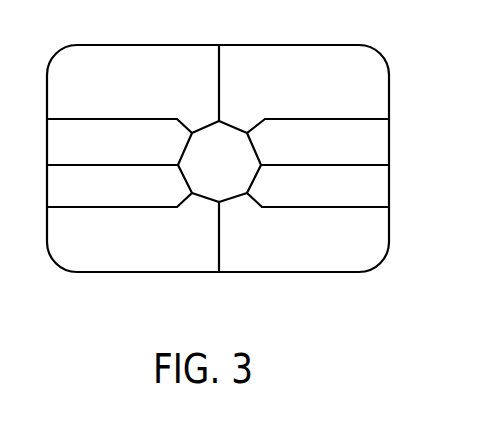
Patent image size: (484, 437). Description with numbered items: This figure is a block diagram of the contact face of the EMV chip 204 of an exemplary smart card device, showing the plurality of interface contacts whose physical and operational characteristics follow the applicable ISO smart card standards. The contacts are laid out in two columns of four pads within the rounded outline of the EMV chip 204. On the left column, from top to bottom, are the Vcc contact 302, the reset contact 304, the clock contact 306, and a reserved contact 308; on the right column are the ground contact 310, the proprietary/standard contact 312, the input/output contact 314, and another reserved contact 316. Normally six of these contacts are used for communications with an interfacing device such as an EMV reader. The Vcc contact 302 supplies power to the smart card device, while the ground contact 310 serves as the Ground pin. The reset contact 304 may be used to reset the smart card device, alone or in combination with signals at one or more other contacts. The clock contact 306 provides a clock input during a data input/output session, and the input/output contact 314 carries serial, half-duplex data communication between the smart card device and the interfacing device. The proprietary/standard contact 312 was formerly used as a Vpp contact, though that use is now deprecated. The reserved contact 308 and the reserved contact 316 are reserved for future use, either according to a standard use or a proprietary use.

The EMV chip 204 is at (218, 145).
The Vcc contact 302 is at (133, 101).
The reset contact 304 is at (119, 147).
The clock contact 306 is at (119, 186).
The reserved contact 308 is at (133, 223).
The ground contact 310 is at (304, 100).
The proprietary/standard contact 312 is at (318, 146).
The input/output contact 314 is at (318, 186).
The reserved contact 316 is at (281, 220).